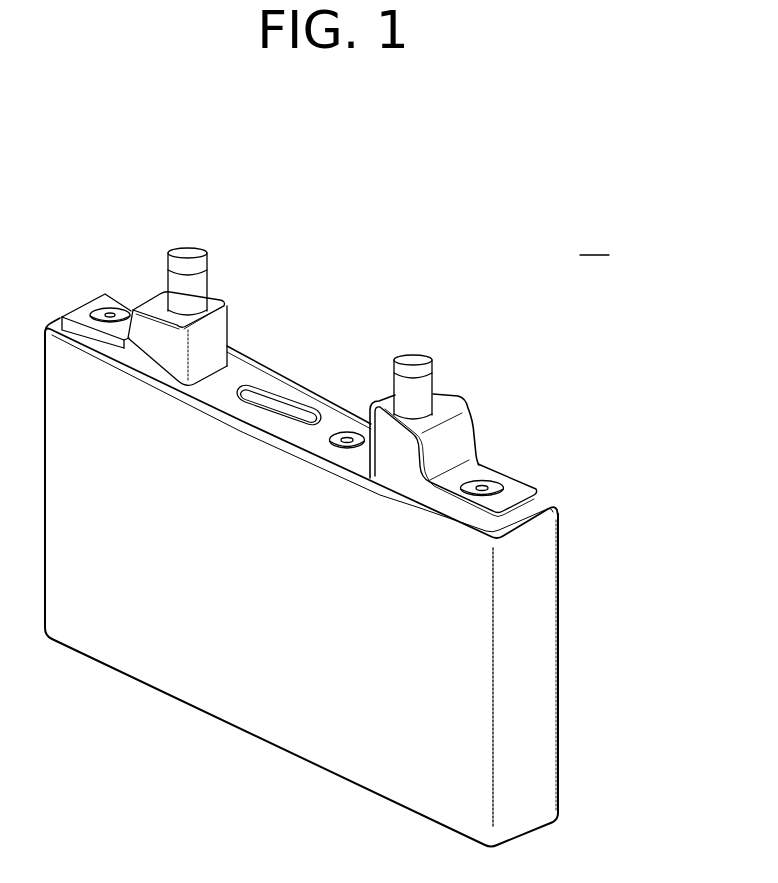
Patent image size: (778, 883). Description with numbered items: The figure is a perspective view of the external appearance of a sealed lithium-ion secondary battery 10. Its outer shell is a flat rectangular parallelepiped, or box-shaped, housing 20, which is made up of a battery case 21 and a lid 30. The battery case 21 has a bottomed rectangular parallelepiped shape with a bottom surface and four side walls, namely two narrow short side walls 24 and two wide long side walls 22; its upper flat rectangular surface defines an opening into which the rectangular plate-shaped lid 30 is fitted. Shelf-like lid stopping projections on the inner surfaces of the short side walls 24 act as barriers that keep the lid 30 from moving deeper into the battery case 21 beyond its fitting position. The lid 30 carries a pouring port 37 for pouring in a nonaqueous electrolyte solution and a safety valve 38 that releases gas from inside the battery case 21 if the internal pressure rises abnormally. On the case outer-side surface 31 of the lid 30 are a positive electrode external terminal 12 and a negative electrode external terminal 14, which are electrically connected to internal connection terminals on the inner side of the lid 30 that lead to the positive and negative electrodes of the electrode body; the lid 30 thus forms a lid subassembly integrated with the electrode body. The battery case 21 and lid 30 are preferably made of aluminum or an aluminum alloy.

The lithium-ion secondary battery 10 is at (594, 240).
The positive electrode external terminal 12 is at (476, 470).
The negative electrode external terminal 14 is at (102, 304).
The housing 20 is at (348, 582).
The battery case 21 is at (560, 691).
The wide long side wall 22 is at (378, 735).
The narrow short side wall 24 is at (533, 626).
The lid 30 is at (299, 382).
The case outer-side surface 31 is at (243, 370).
The pouring port 37 is at (358, 388).
The safety valve 38 is at (284, 406).